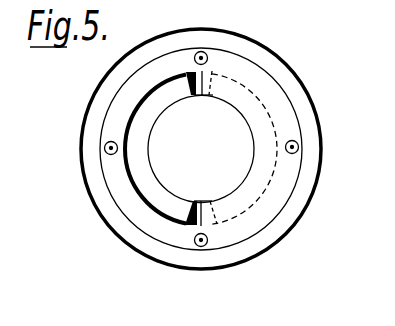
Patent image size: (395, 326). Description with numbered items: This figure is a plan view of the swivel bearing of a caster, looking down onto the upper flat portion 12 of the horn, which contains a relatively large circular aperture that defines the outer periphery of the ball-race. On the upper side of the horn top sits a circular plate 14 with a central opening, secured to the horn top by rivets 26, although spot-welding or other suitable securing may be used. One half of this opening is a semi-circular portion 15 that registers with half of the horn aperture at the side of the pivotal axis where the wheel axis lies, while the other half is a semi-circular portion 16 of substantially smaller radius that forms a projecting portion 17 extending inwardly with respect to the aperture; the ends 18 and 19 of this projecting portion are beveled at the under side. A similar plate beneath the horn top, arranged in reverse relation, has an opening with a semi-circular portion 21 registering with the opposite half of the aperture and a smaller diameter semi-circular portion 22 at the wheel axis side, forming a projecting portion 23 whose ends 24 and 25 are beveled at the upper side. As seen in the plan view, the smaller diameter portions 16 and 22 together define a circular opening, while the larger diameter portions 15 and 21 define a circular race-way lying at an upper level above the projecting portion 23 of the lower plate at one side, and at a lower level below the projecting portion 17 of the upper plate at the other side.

The upper flat portion 12 is at (297, 81).
The circular plate 14 is at (290, 118).
The rivets 26 is at (302, 147).
The semi-circular portion 15 is at (133, 178).
The semi-circular portion 21 is at (240, 113).
The smaller diameter semi-circular portion 22 is at (150, 131).
The projecting portion 23 is at (147, 171).
The projecting portion 17 is at (263, 132).
The semi-circular portion 16 is at (249, 164).
The end 25 is at (193, 95).
The end 19 is at (205, 96).
The end 24 is at (196, 201).
The end 18 is at (210, 203).